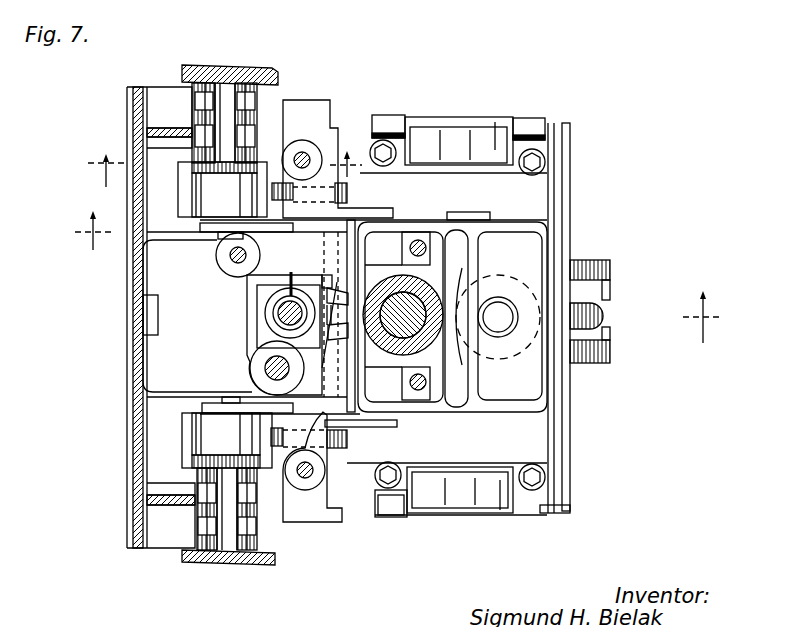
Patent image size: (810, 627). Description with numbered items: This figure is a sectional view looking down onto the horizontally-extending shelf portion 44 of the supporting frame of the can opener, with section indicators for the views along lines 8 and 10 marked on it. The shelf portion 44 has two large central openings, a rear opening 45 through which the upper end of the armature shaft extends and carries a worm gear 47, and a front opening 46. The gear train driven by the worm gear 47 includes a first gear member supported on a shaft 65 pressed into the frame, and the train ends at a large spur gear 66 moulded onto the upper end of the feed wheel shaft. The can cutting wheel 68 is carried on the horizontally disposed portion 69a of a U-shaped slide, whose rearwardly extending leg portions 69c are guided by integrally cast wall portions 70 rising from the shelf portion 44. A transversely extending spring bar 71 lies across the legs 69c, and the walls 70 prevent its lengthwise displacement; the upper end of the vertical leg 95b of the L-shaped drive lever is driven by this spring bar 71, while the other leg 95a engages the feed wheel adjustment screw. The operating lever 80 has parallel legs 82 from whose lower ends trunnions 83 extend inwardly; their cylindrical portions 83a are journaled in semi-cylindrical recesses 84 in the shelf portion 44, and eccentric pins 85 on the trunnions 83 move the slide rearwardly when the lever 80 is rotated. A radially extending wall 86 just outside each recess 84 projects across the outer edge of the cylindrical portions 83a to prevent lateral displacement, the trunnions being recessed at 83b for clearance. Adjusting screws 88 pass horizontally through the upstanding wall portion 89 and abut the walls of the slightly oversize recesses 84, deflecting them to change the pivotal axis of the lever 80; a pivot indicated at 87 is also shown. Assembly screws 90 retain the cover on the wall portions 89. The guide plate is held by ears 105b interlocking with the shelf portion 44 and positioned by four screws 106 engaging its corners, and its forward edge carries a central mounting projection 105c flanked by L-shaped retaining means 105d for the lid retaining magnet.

The shelf portion 44 is at (323, 522).
The opening 45 is at (266, 309).
The opening 46 is at (400, 454).
The worm gear 47 is at (293, 275).
The shaft 65 is at (231, 264).
The large spur gear 66 is at (268, 360).
The can cutting wheel 68 is at (550, 373).
The horizontally disposed portion 69a is at (511, 249).
The leg portions 69c is at (436, 323).
The wall portions 70 is at (387, 213).
The spring bar 71 is at (356, 249).
The operating lever 80 is at (231, 66).
The legs 82 is at (253, 66).
The trunnions 83 is at (243, 113).
The cylindrical portions 83a is at (207, 204).
The recess 83b is at (197, 167).
The semi-cylindrical recesses 84 is at (200, 191).
The eccentric pins 85 is at (240, 398).
The wall 86 is at (232, 115).
The lever pivot 87 is at (313, 158).
The adjusting screws 88 is at (330, 180).
The upstanding wall portion 89 is at (307, 205).
The assembly screws 90 is at (306, 152).
The leg 95a is at (437, 350).
The leg 95b is at (320, 322).
The ears 105b is at (392, 125).
The central mounting projection 105c is at (597, 317).
The L-shaped retaining means 105d is at (610, 272).
The screws 106 is at (398, 155).
The section line 8- 8 is at (390, 279).
The section line 10- 10 is at (221, 183).